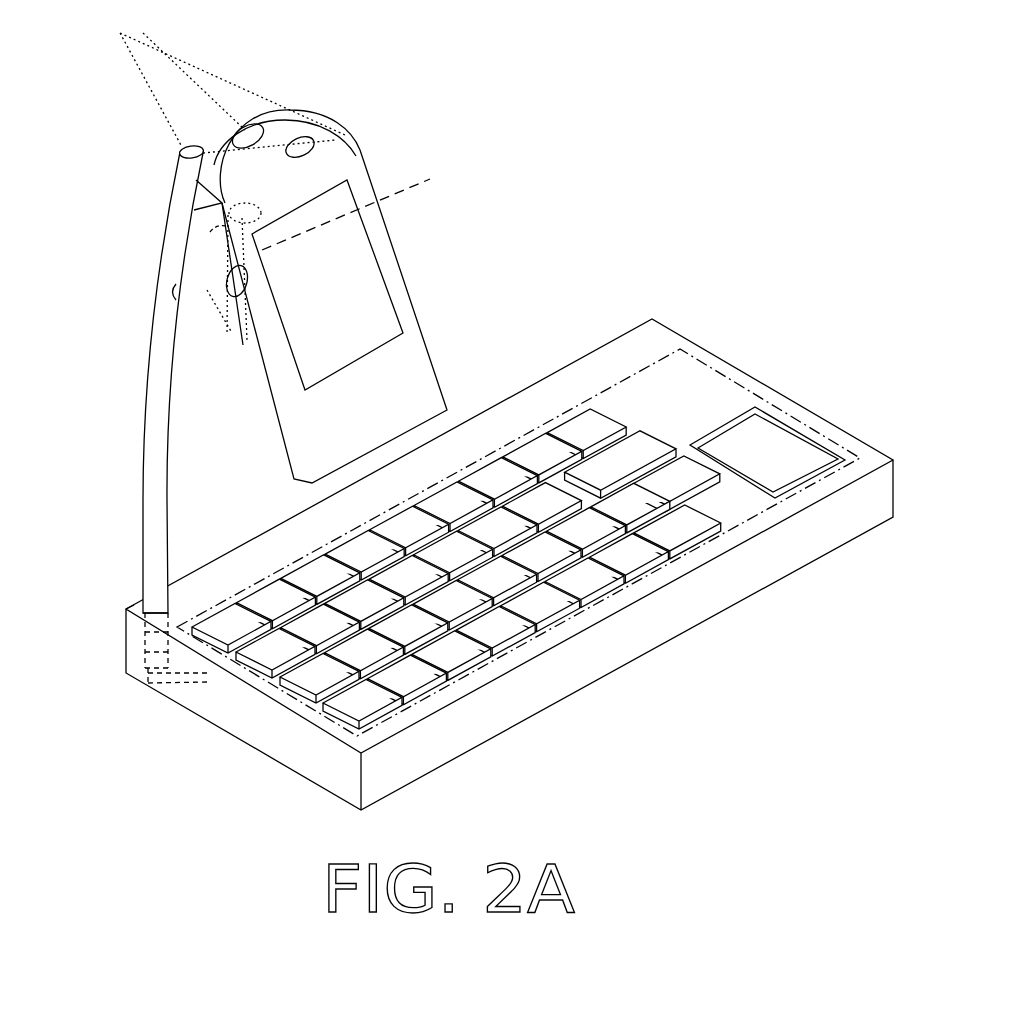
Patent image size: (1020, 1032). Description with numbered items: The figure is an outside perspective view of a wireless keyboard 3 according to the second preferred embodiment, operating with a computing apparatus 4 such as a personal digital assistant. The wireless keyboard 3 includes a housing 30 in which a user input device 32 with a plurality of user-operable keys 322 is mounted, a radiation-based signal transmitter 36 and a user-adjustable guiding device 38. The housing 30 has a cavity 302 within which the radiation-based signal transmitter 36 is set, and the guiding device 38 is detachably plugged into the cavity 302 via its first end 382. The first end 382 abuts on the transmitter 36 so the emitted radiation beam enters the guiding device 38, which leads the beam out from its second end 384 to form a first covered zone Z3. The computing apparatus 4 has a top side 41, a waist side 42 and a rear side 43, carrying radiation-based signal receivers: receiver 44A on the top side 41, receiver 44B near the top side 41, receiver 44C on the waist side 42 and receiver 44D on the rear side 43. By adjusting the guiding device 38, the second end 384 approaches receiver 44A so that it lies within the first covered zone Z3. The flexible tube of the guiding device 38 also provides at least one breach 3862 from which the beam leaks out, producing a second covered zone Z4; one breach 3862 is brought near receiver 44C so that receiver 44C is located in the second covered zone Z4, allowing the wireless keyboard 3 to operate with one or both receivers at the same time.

The wireless keyboard 3 is at (461, 532).
The housing 30 is at (250, 712).
The cavity 302 is at (125, 612).
The user input device 32 is at (796, 389).
The user-operable keys 322 is at (622, 457).
The radiation-based signal transmitter 36 is at (127, 662).
The user-adjustable guiding device 38 is at (118, 378).
The first end 382 is at (150, 600).
The second end 384 is at (179, 158).
The breach 3862 is at (172, 292).
The computing apparatus 4 is at (249, 255).
The top side 41 is at (277, 117).
The waist side 42 is at (243, 352).
The rear side 43 is at (210, 228).
The radiation-based signal receiver 44A is at (243, 135).
The radiation-based signal receiver 44B is at (333, 140).
The radiation-based signal receiver 44C is at (228, 296).
The radiation-based signal receiver 44D is at (223, 217).
The first covered zone Z3 is at (147, 90).
The second covered zone Z4 is at (365, 206).